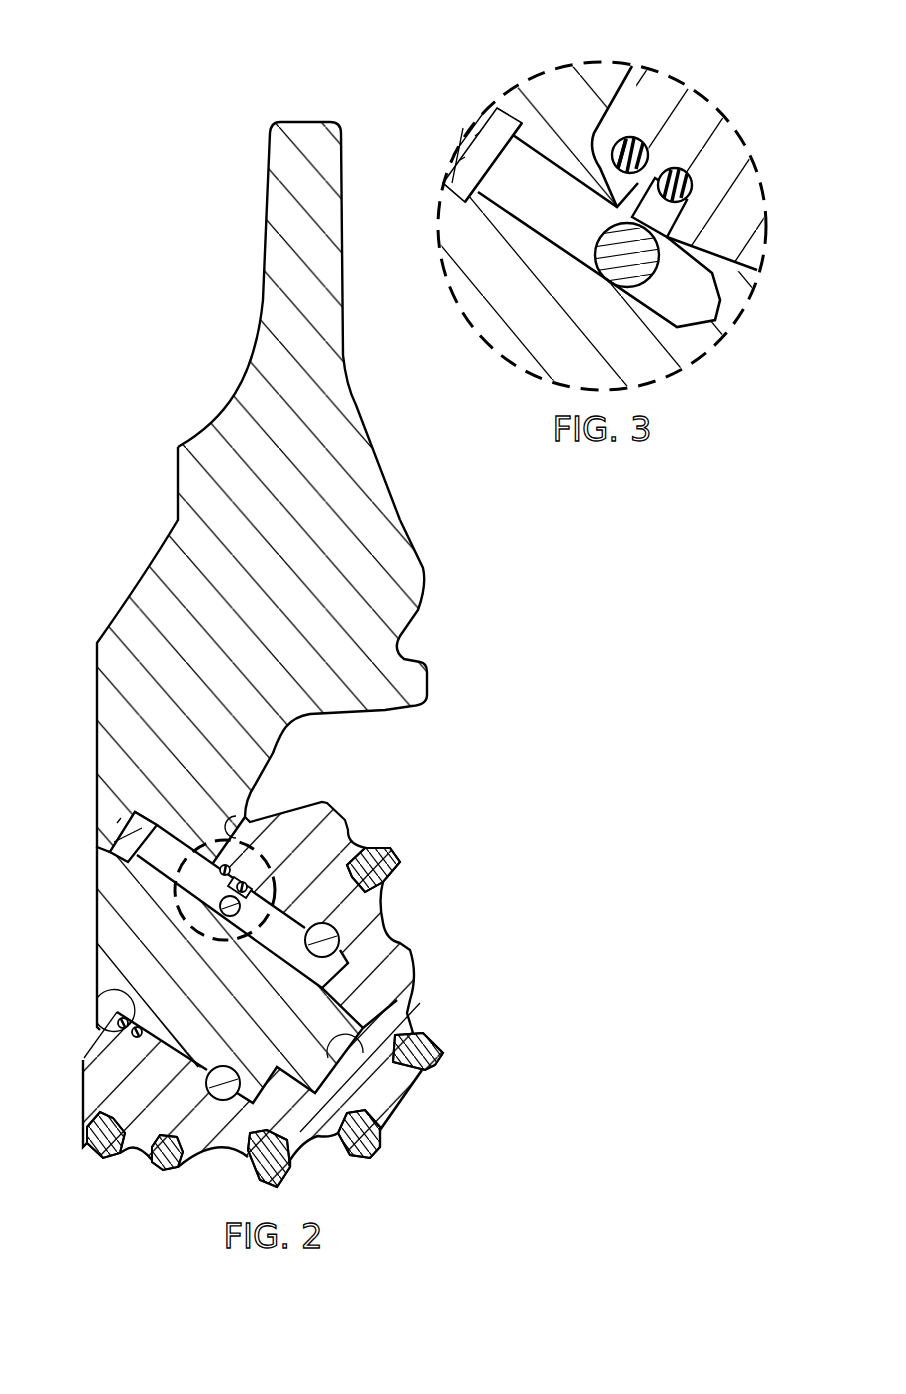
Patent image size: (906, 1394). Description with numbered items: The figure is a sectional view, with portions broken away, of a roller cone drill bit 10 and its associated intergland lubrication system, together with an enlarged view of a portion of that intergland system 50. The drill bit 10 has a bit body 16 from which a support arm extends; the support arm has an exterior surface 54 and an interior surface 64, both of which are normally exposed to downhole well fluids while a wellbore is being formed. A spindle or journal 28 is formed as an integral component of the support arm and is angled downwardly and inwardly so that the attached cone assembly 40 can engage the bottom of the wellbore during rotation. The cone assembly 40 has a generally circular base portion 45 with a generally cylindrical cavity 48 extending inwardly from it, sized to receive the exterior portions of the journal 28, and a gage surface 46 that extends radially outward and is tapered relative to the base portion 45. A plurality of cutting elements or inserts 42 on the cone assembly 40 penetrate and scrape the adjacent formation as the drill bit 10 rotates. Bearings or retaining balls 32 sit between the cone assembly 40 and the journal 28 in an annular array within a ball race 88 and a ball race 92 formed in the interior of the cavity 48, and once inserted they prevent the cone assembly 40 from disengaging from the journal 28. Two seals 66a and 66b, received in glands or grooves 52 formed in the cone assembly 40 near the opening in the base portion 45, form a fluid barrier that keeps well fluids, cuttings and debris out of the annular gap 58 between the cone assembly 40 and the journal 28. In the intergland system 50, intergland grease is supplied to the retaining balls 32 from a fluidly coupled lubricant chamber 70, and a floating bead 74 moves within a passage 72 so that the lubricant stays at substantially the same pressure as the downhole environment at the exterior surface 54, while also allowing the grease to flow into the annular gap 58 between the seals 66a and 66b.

In FIG. 2, the roller cone drill bit 10 is at (286, 492).
In FIG. 2, the bit body 16 is at (178, 485).
In FIG. 2, the interior surface 64 is at (447, 592).
In FIG. 2, the exterior surface 54 is at (35, 884).
In FIG. 2, the gage surface 46 is at (337, 807).
In FIG. 2, the cone assembly 40 is at (413, 962).
In FIG. 2, the cavity 48 is at (365, 1055).
In FIG. 2, the spindle or journal 28 is at (173, 1057).
In FIG. 2, the cutting elements or inserts 42 is at (400, 857).
In FIG. 2, the bearings or retaining balls 32 is at (338, 927).
In FIG. 2, the ball race 92 is at (340, 950).
In FIG. 2, the ball race 88 is at (305, 942).
In FIG. 2, the passage 72 is at (207, 845).
In FIG. 3, the passage 72 is at (513, 197).
In FIG. 2, the lubricant chamber 70 is at (127, 835).
In FIG. 3, the lubricant chamber 70 is at (462, 150).
In FIG. 2, the floating bead 74 is at (227, 923).
In FIG. 3, the floating bead 74 is at (598, 240).
In FIG. 2, the seal 66a is at (256, 860).
In FIG. 3, the seal 66a is at (613, 140).
In FIG. 2, the seal 66b is at (267, 892).
In FIG. 3, the seal 66b is at (693, 186).
In FIG. 2, the base portion 45 is at (242, 813).
In FIG. 2, the intergland system 50 is at (163, 888).
In FIG. 2, the glands or grooves 52 is at (107, 990).
In FIG. 3, the glands or grooves 52 is at (690, 176).
In FIG. 2, the annular gap 58 is at (100, 1033).
In FIG. 3, the annular gap 58 is at (633, 140).